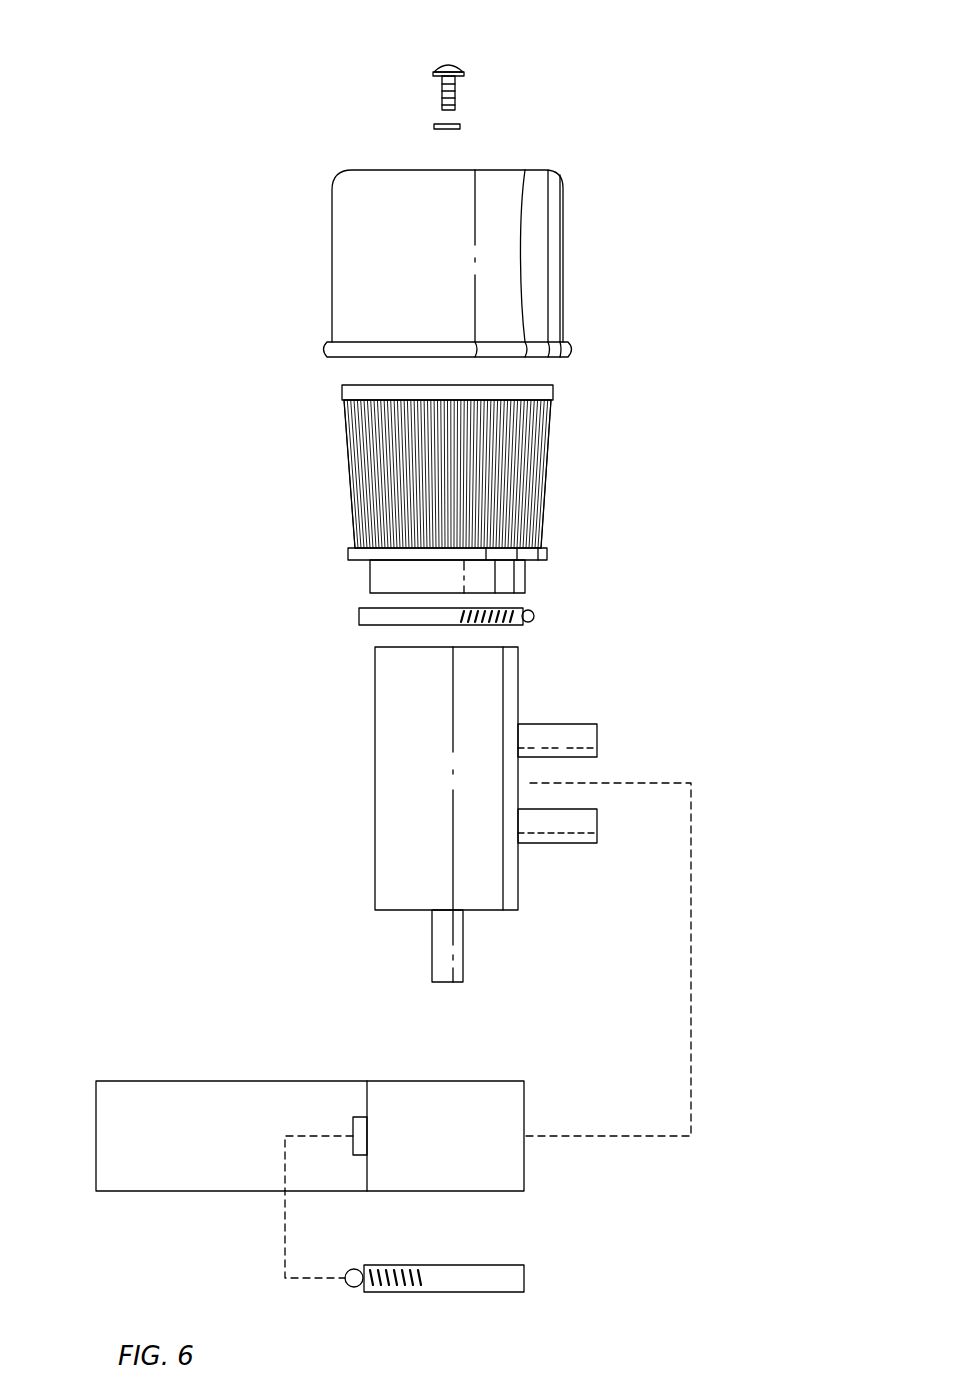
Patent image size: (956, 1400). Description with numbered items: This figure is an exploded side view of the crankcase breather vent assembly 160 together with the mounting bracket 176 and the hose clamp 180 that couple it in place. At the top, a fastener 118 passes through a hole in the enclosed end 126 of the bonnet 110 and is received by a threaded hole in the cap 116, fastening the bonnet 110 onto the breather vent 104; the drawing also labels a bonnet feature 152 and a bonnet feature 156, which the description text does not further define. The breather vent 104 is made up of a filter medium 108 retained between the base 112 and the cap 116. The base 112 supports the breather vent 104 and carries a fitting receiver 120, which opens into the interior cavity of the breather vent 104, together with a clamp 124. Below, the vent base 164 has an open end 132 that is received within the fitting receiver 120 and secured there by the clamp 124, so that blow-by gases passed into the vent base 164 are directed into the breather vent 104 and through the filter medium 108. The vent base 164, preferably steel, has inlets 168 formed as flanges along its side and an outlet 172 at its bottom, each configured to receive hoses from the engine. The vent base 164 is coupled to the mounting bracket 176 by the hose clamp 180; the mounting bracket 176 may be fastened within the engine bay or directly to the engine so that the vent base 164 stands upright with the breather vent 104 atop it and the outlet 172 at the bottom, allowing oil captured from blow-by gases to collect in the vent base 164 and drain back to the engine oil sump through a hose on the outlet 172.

The breather vent 104 is at (560, 567).
The filter medium 108 is at (546, 465).
The bonnet 110 is at (360, 146).
The base 112 is at (372, 552).
The cap 116 is at (542, 388).
The fastener 118 is at (440, 62).
The fitting receiver 120 is at (382, 574).
The clamp 124 is at (534, 617).
The enclosed end 126 is at (527, 170).
The open end 132 is at (395, 648).
The housing cap 152 is at (565, 236).
The cap rim 156 is at (340, 356).
The crankcase breather vent assembly 160 is at (512, 50).
The vent base 164 is at (400, 922).
The inlets 168 is at (586, 740).
The outlet 172 is at (455, 955).
The mounting bracket 176 is at (146, 1081).
The hose clamp 180 is at (508, 1275).